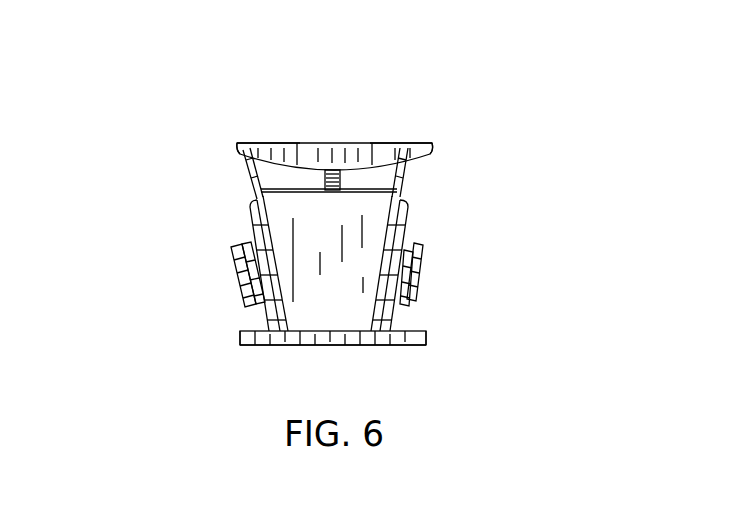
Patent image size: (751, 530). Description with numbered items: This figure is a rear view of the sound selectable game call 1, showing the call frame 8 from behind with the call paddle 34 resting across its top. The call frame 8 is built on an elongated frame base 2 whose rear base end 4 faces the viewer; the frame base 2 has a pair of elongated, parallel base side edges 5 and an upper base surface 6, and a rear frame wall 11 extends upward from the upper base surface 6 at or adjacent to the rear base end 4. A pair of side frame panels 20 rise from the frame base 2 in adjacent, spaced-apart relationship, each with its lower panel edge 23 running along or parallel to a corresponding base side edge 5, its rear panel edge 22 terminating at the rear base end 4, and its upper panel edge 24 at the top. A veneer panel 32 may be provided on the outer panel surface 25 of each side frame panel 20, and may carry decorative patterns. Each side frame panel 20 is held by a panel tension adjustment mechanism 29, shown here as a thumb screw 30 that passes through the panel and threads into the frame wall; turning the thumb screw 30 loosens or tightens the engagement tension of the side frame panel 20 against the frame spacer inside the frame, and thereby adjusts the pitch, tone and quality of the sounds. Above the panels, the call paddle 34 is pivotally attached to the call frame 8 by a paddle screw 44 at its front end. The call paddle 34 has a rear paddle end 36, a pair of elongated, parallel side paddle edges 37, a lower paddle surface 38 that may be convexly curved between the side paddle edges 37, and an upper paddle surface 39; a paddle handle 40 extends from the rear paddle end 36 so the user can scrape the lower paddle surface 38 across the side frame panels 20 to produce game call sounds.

The sound selectable game call 1 is at (290, 78).
The frame base 2 is at (265, 358).
The rear base end 4 is at (390, 338).
The base side edges 5 is at (240, 342).
The upper base surface 6 is at (343, 322).
The call frame 8 is at (379, 372).
The rear frame wall 11 is at (426, 247).
The side frame panels 20 is at (246, 223).
The rear panel edge 22 is at (283, 246).
The lower panel edge 23 is at (382, 334).
The upper panel edge 24 is at (243, 146).
The outer panel surface 25 is at (268, 318).
The panel tension adjustment mechanism 29 is at (230, 292).
The thumb screw 30 is at (232, 289).
The veneer panel 32 is at (250, 210).
The call paddle 34 is at (386, 130).
The rear paddle end 36 is at (436, 180).
The side paddle edges 37 is at (240, 150).
The lower paddle surface 38 is at (258, 192).
The upper paddle surface 39 is at (265, 140).
The paddle handle 40 is at (350, 128).
The paddle screw 44 is at (343, 178).